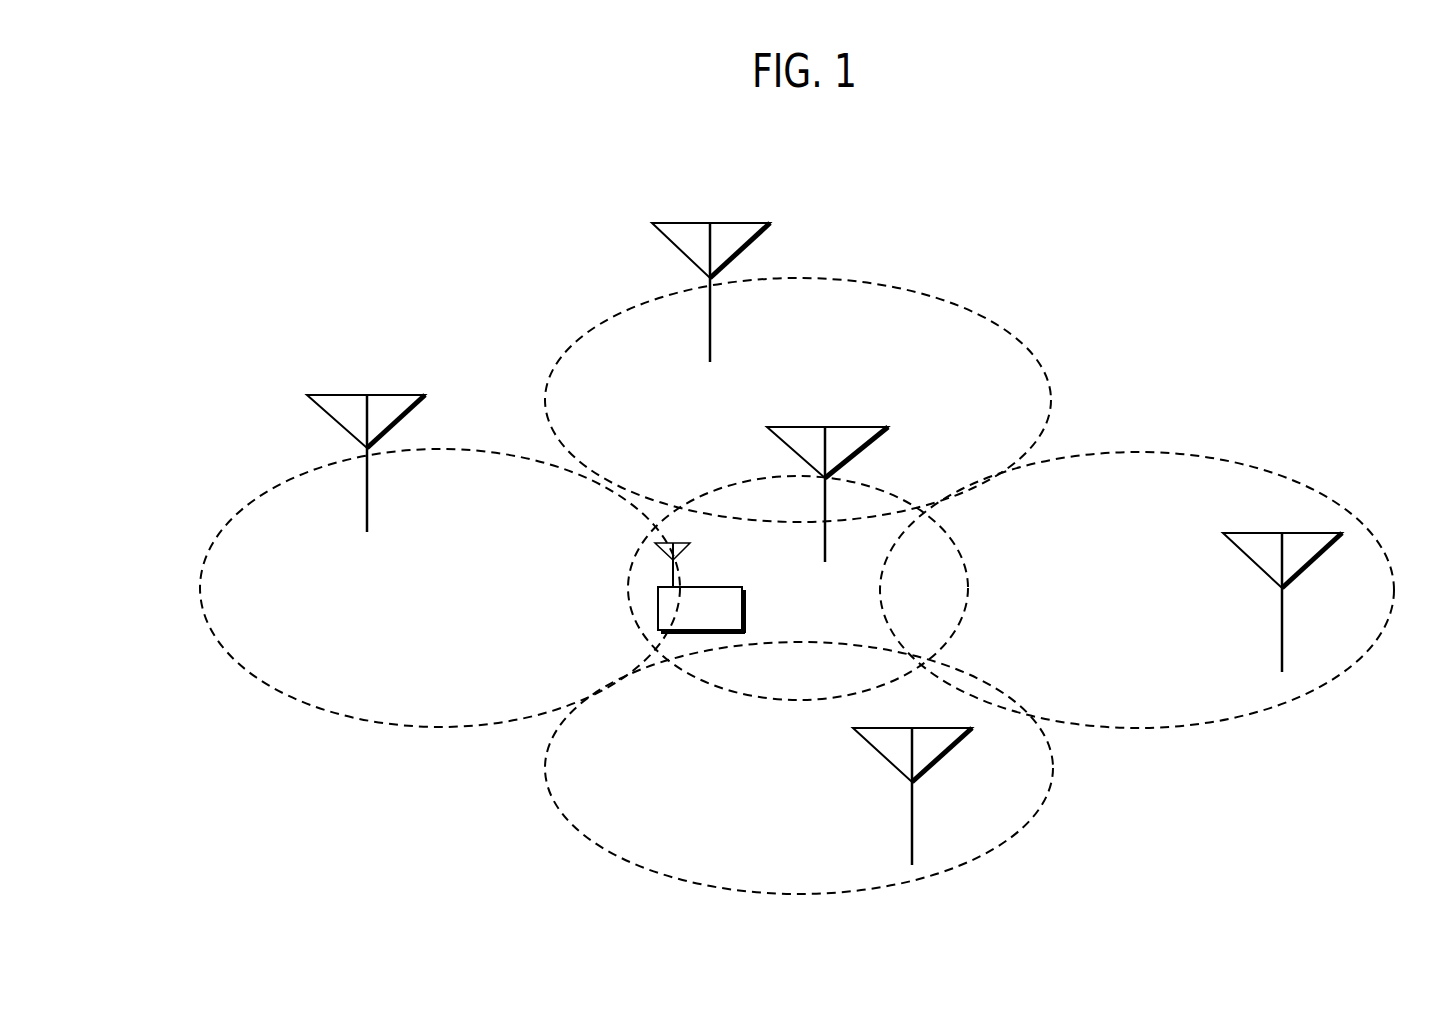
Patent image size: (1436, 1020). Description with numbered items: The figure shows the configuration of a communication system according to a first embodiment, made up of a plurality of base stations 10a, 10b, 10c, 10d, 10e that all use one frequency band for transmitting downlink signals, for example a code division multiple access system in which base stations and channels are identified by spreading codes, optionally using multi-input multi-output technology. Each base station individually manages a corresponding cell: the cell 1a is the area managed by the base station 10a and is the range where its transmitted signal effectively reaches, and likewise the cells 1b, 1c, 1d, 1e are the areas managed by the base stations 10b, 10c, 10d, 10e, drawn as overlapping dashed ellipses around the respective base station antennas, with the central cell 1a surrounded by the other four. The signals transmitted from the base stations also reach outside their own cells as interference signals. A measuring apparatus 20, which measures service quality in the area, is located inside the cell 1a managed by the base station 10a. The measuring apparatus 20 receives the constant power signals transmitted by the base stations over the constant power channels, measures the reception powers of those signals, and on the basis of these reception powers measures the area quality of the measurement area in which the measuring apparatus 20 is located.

The cell 1a is at (963, 560).
The cell 1b is at (912, 293).
The cell 1c is at (250, 502).
The cell 1d is at (563, 817).
The cell 1e is at (1295, 480).
The base station 10a is at (826, 512).
The base station 10b is at (712, 335).
The base station 10c is at (368, 503).
The base station 10d is at (910, 833).
The base station 10e is at (1280, 638).
The measuring apparatus 20 is at (746, 607).